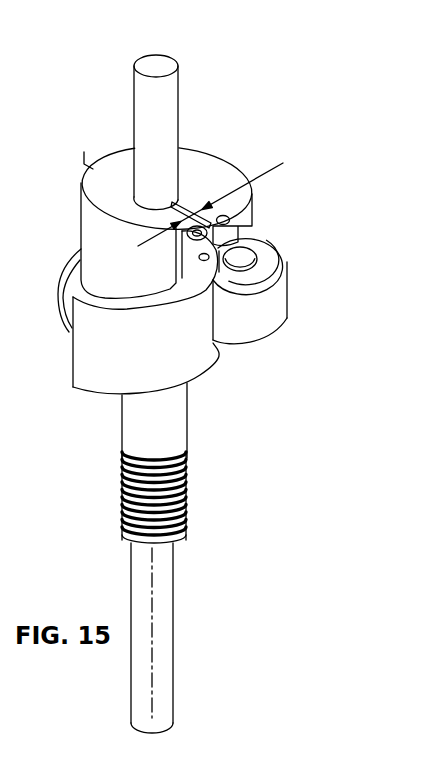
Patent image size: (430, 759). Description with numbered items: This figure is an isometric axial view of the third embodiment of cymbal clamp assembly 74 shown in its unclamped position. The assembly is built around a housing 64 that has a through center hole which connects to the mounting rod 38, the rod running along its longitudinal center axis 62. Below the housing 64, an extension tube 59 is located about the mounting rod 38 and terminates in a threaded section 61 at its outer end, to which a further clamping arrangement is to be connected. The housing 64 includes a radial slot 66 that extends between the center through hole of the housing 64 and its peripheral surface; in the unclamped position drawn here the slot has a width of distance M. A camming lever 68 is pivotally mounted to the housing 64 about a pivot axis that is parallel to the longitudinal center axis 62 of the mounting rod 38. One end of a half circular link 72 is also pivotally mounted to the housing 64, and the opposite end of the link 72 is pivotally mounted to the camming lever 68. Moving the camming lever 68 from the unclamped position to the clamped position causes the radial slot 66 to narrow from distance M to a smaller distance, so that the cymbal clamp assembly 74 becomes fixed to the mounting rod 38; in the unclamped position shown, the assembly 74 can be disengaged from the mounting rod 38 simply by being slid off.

The mounting rod 38 is at (173, 698).
The extension tube 59 is at (170, 440).
The threaded section 61 is at (186, 512).
The longitudinal center axis 62 is at (152, 630).
The housing 64 is at (200, 170).
The radial slot 66 is at (209, 204).
The camming lever 68 is at (112, 358).
The half circular link 72 is at (250, 315).
The cymbal clamp assembly 74 is at (305, 273).
The distance M is at (223, 196).